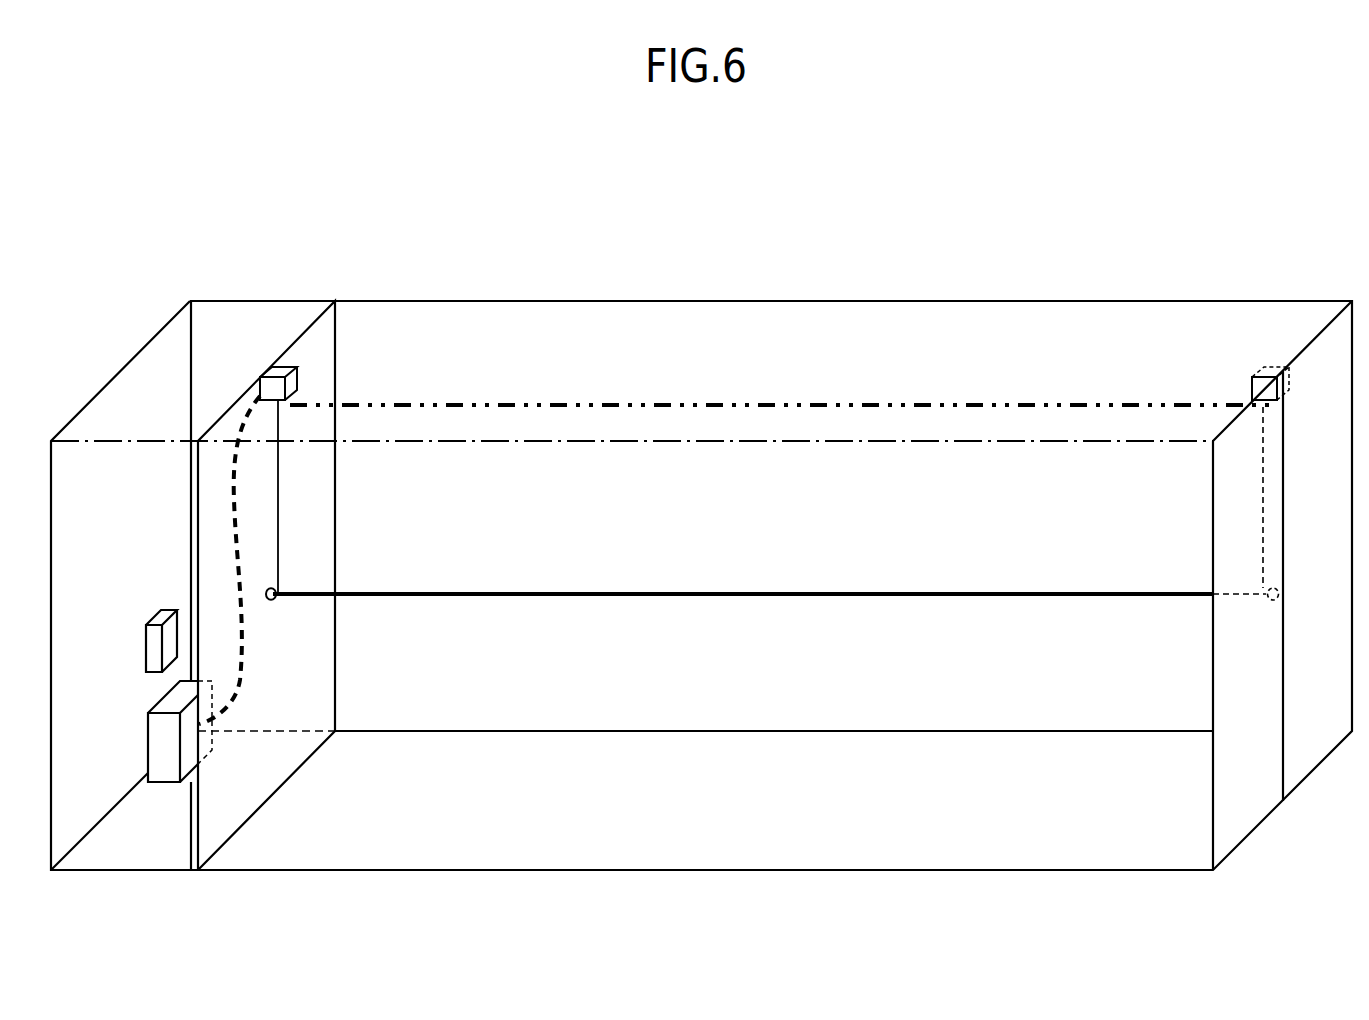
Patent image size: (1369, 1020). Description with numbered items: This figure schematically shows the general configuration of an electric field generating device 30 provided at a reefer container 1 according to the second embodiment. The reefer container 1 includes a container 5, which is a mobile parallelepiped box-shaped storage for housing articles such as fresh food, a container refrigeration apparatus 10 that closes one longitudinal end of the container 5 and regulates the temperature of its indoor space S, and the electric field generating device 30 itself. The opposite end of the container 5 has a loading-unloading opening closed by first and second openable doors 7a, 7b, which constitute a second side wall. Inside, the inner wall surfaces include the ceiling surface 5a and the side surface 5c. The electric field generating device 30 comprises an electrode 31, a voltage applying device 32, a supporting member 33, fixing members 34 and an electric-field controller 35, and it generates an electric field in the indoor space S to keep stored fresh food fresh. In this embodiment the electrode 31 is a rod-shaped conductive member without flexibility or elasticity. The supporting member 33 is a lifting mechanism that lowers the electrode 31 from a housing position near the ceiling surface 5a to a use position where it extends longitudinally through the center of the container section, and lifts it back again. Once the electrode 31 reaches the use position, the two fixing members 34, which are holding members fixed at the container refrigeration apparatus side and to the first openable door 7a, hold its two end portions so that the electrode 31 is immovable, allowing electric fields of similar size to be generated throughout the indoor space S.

The reefer container 1 is at (830, 192).
The container 5 is at (867, 302).
The ceiling surface 5a is at (1028, 348).
The side surface 5c is at (763, 829).
The first openable door 7a is at (1242, 813).
The second openable door 7b is at (1313, 748).
The container refrigeration apparatus 10 is at (265, 280).
The electric field generating device 30 is at (693, 578).
The electrode 31 is at (926, 403).
The voltage applying device 32 is at (157, 740).
The supporting member 33 is at (277, 370).
The fixing member 34 is at (271, 602).
The electric-field controller 35 is at (150, 643).
The indoor space S is at (787, 674).